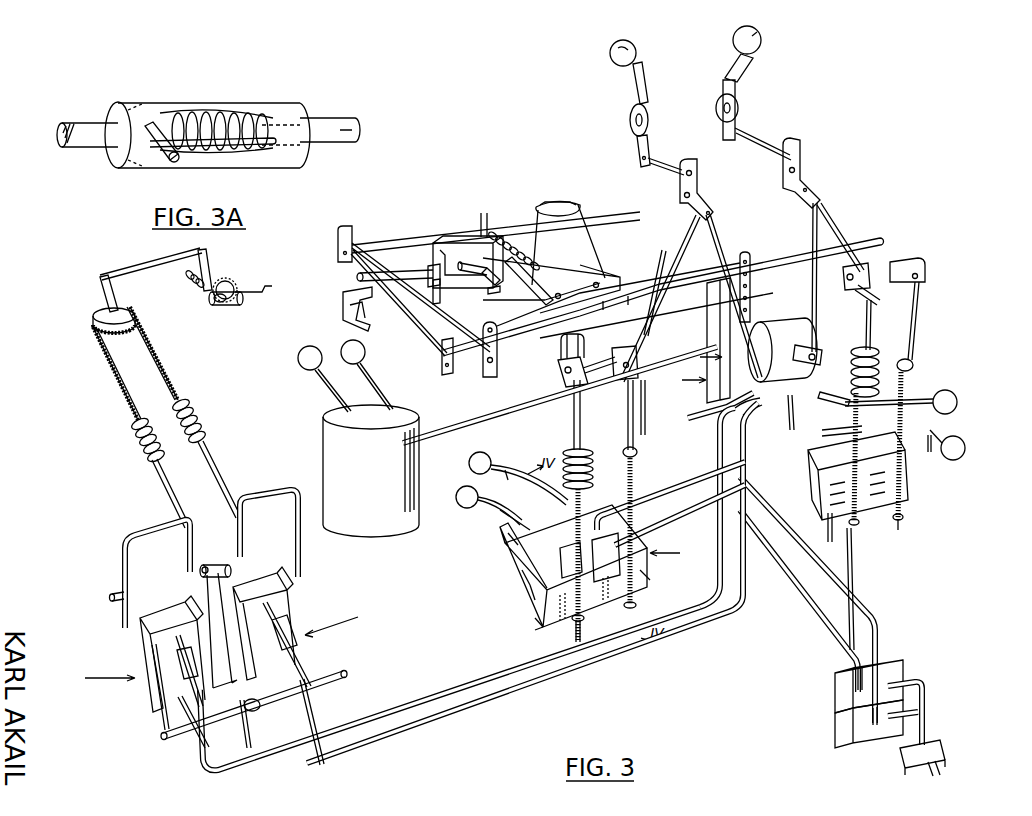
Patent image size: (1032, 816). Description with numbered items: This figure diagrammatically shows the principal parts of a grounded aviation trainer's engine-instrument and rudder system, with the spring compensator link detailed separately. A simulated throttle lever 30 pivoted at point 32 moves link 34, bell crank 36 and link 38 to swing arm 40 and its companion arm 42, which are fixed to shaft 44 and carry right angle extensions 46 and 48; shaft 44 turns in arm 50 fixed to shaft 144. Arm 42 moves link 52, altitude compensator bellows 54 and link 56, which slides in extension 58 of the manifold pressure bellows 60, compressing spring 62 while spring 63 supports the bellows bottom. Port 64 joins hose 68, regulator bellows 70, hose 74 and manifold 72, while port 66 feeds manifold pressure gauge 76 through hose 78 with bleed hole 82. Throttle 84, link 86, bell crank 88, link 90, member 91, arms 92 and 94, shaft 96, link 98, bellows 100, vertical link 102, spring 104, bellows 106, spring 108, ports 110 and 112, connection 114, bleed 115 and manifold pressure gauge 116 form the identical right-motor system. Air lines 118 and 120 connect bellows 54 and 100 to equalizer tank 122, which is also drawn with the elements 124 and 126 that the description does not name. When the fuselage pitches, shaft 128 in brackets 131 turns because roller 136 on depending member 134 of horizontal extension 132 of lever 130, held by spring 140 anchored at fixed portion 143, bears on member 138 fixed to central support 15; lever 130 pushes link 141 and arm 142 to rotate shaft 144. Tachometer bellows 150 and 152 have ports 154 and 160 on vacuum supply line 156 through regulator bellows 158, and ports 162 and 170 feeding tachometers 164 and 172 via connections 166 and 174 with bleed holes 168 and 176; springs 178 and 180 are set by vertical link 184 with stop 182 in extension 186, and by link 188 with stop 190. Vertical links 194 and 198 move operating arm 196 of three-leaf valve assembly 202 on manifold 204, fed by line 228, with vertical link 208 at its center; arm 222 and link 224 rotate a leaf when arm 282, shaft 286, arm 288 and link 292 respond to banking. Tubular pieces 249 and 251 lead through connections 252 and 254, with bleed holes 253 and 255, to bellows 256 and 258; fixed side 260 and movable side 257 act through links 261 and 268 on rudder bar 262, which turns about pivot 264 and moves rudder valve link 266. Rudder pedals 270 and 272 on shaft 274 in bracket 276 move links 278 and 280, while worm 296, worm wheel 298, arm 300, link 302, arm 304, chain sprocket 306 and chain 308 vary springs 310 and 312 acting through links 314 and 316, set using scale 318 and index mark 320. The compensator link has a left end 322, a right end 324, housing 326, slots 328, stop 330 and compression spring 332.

In FIG. 3, the central support 15 is at (583, 232).
In FIG. 3, the simulated throttle lever 30 is at (610, 54).
In FIG. 3, the pivot point 32 is at (630, 121).
In FIG. 3, the link 34 is at (655, 164).
In FIG. 3, the bell crank 36 is at (680, 186).
In FIG. 3, the link 38 is at (686, 236).
In FIG. 3, the arm 40 is at (683, 380).
In FIG. 3, the companion arm 42 is at (627, 418).
In FIG. 3, the shaft 44 is at (558, 370).
In FIG. 3, the right angle extension 46 is at (618, 381).
In FIG. 3, the right angle extension 48 is at (580, 373).
In FIG. 3, the arm 50 is at (572, 334).
In FIG. 3, the link 52 is at (593, 451).
In FIG. 3, the altitude compensator bellows 54 is at (594, 470).
In FIG. 3, the link 56 is at (574, 636).
In FIG. 3, the extension 58 is at (585, 618).
In FIG. 3, the manifold pressure bellows 60 is at (497, 575).
In FIG. 3, the spring 62 is at (535, 600).
In FIG. 3, the spring 63 is at (540, 623).
In FIG. 3, the port 64 is at (530, 585).
In FIG. 3, the port 66 is at (510, 545).
In FIG. 3, the hose 68 is at (700, 492).
In FIG. 3, the regulator bellows 70 is at (838, 690).
In FIG. 3, the manifold 72 is at (947, 751).
In FIG. 3, the hose 74 is at (926, 727).
In FIG. 3, the manifold pressure gauge 76 is at (456, 496).
In FIG. 3, the hose 78 is at (515, 512).
In FIG. 3, the bleed hole 82 is at (505, 518).
In FIG. 3, the throttle 84 is at (762, 42).
In FIG. 3, the link 86 is at (770, 142).
In FIG. 3, the bell crank 88 is at (802, 162).
In FIG. 3, the link 90 is at (835, 228).
In FIG. 3, the member 91 is at (882, 243).
In FIG. 3, the arm 92 is at (876, 296).
In FIG. 3, the arm 94 is at (922, 265).
In FIG. 3, the shaft 96 is at (845, 277).
In FIG. 3, the link 98 is at (870, 322).
In FIG. 3, the altitude compensator bellows 100 is at (879, 360).
In FIG. 3, the vertical link 102 is at (849, 570).
In FIG. 3, the spring 104 is at (857, 522).
In FIG. 3, the manifold pressure bellows 106 is at (805, 529).
In FIG. 3, the spring 108 is at (830, 544).
In FIG. 3, the port 110 is at (790, 497).
In FIG. 3, the port 112 is at (742, 418).
In FIG. 3, the connection 114 is at (938, 435).
In FIG. 3, the bleed 115 is at (929, 452).
In FIG. 3, the manifold pressure gauge 116 is at (966, 447).
In FIG. 3, the air line 118 is at (573, 412).
In FIG. 3, the air line 120 is at (420, 438).
In FIG. 3, the equalizer tank 122 is at (322, 430).
In FIG. 3, the knob 124 is at (300, 350).
In FIG. 3, the knob 126 is at (346, 342).
In FIG. 3, the horizontal shaft 128 is at (362, 314).
In FIG. 3, the lever 130 is at (430, 287).
In FIG. 3, the bracket 131 is at (355, 291).
In FIG. 3, the horizontal extension 132 is at (450, 240).
In FIG. 3, the depending member 134 is at (492, 294).
In FIG. 3, the roller 136 is at (485, 283).
In FIG. 3, the upwardly extending member 138 is at (465, 272).
In FIG. 3, the spring 140 is at (513, 246).
In FIG. 3, the link 141 is at (438, 303).
In FIG. 3, the arm 142 is at (492, 378).
In FIG. 3, the fixed portion 143 is at (536, 280).
In FIG. 3, the shaft 144 is at (615, 328).
In FIG. 3, the tachometer bellows 150 is at (681, 553).
In FIG. 3, the tachometer bellows 152 is at (919, 488).
In FIG. 3, the port 154 is at (602, 557).
In FIG. 3, the vacuum supply line 156 is at (705, 478).
In FIG. 3, the regulator bellows 158 is at (838, 722).
In FIG. 3, the port 160 is at (822, 433).
In FIG. 3, the port 162 is at (560, 560).
In FIG. 3, the tachometer 164 is at (469, 463).
In FIG. 3, the connection 166 is at (530, 472).
In FIG. 3, the bleed hole 168 is at (507, 470).
In FIG. 3, the port 170 is at (840, 394).
In FIG. 3, the tachometer 172 is at (957, 402).
In FIG. 3, the connection 174 is at (925, 400).
In FIG. 3, the bleed hole 176 is at (902, 430).
In FIG. 3, the spring 178 is at (650, 577).
In FIG. 3, the spring 180 is at (897, 518).
In FIG. 3, the stop 182 is at (638, 450).
In FIG. 3, the vertical link 184 is at (646, 400).
In FIG. 3, the extension 186 is at (637, 605).
In FIG. 3, the link 188 is at (917, 310).
In FIG. 3, the stop 190 is at (913, 366).
In FIG. 3, the vertical link 194 is at (717, 236).
In FIG. 3, the operating arm 196 is at (818, 350).
In FIG. 3, the vertical link 198 is at (812, 213).
In FIG. 3, the three-leaf valve assembly 202 is at (693, 360).
In FIG. 3, the manifold 204 is at (708, 327).
In FIG. 3, the vertical link 208 is at (782, 337).
In FIG. 3, the upstanding arm 222 is at (751, 262).
In FIG. 3, the link 224 is at (652, 290).
In FIG. 3, the line 228 is at (686, 418).
In FIG. 3, the tubular piece 249 is at (789, 410).
In FIG. 3, the tubular piece 251 is at (816, 361).
In FIG. 3, the connection 252 is at (718, 452).
In FIG. 3, the bleed hole 253 is at (205, 770).
In FIG. 3, the connection 254 is at (712, 630).
In FIG. 3, the bleed hole 255 is at (310, 712).
In FIG. 3, the bellows 256 is at (94, 678).
In FIG. 3, the rear side 257 is at (160, 655).
In FIG. 3, the bellows 258 is at (346, 621).
In FIG. 3, the side 260 is at (140, 637).
In FIG. 3, the link 261 is at (245, 704).
In FIG. 3, the rudder bar 262 is at (347, 675).
In FIG. 3, the pivot 264 is at (250, 734).
In FIG. 3, the rudder valve link 266 is at (200, 745).
In FIG. 3, the link 268 is at (282, 640).
In FIG. 3, the rudder pedal 270 is at (125, 542).
In FIG. 3, the rudder pedal 272 is at (286, 492).
In FIG. 3, the shaft 274 is at (207, 566).
In FIG. 3, the bracket 276 is at (231, 573).
In FIG. 3, the link 278 is at (160, 715).
In FIG. 3, the link 280 is at (293, 598).
In FIG. 3, the arm 282 is at (440, 362).
In FIG. 3, the shaft 286 is at (385, 273).
In FIG. 3, the arm 288 is at (350, 232).
In FIG. 3, the link 292 is at (400, 242).
In FIG. 3, the worm 296 is at (228, 306).
In FIG. 3, the worm wheel 298 is at (238, 282).
In FIG. 3, the arm 300 is at (210, 258).
In FIG. 3, the link 302 is at (145, 264).
In FIG. 3, the arm 304 is at (100, 292).
In FIG. 3, the chain sprocket 306 is at (92, 316).
In FIG. 3, the chain 308 is at (118, 385).
In FIG. 3, the spring 310 is at (134, 426).
In FIG. 3, the spring 312 is at (203, 420).
In FIG. 3, the link 314 is at (160, 470).
In FIG. 3, the link 316 is at (222, 470).
In FIG. 3, the scale 318 is at (185, 277).
In FIG. 3, the index mark 320 is at (212, 299).
In FIG. 3A, the left end 322 is at (338, 124).
In FIG. 3A, the right end 324 is at (72, 126).
In FIG. 3A, the housing 326 is at (292, 102).
In FIG. 3A, the slot 328 is at (255, 148).
In FIG. 3A, the stop 330 is at (168, 160).
In FIG. 3A, the compression spring 332 is at (190, 152).